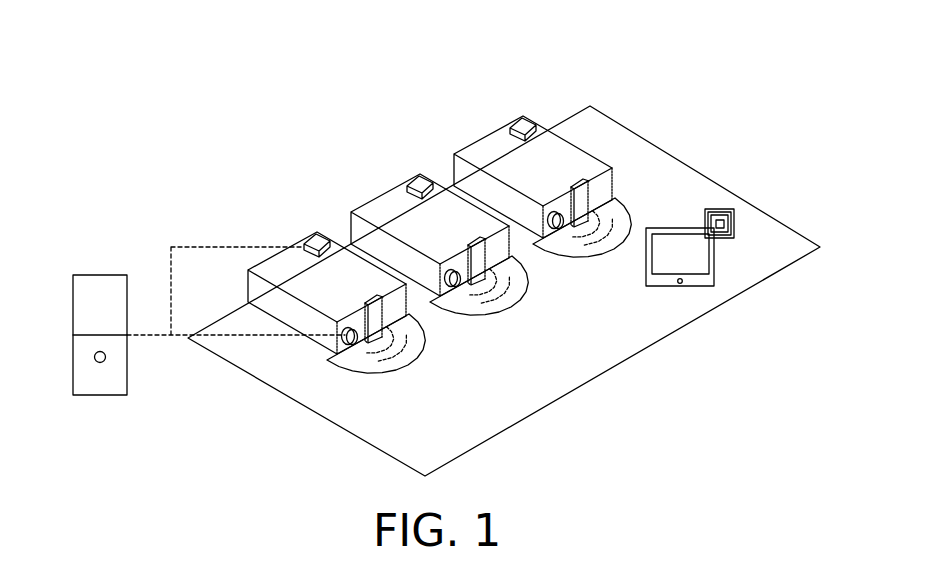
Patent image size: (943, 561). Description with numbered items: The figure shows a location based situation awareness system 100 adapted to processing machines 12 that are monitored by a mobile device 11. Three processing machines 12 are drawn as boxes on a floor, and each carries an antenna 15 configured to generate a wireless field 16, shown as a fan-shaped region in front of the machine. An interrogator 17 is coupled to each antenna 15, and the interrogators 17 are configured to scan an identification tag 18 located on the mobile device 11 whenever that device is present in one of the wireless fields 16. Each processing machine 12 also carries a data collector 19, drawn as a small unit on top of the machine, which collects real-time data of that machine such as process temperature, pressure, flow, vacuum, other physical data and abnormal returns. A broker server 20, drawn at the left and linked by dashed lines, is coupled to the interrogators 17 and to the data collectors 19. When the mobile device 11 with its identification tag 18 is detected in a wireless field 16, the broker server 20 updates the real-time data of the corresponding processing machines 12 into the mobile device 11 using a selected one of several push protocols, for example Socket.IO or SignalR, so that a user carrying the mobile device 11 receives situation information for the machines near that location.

The location based situation awareness system 100 is at (63, 35).
The mobile device 11 is at (714, 255).
The processing machine 12 is at (344, 299).
The antenna 15 is at (370, 346).
The wireless field 16 is at (602, 243).
The interrogator 17 is at (349, 347).
The identification tag 18 is at (720, 208).
The data collector 19 is at (314, 235).
The broker server 20 is at (100, 396).